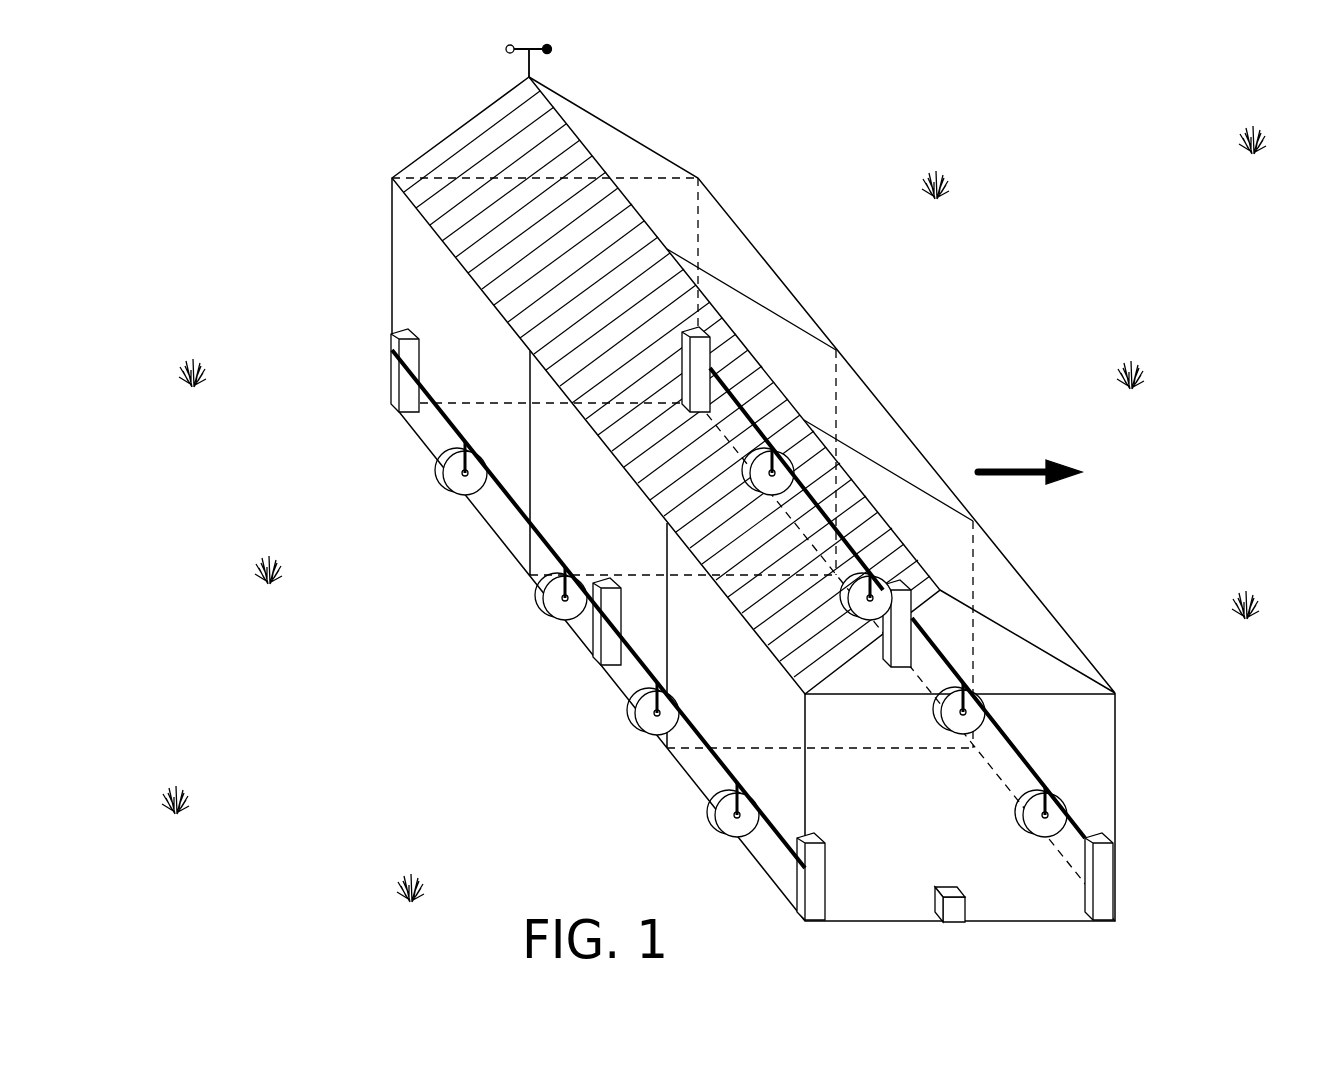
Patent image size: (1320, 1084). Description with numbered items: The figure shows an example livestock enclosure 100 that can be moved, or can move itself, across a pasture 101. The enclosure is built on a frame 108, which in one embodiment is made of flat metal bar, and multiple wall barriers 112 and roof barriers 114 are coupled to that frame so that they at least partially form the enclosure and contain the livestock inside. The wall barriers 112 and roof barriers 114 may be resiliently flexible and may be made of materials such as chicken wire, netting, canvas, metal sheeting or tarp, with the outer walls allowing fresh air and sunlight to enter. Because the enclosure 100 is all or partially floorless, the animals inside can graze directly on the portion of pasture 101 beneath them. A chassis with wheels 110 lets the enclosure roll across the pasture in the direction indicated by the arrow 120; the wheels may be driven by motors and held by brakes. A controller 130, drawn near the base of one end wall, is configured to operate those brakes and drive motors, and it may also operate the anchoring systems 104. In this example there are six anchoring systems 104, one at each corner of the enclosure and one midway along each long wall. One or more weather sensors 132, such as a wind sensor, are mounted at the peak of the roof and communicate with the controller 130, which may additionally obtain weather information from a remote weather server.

The livestock enclosure 100 is at (176, 195).
The pasture 101 is at (1117, 258).
The anchoring systems 104 is at (718, 168).
The frame 108 is at (435, 421).
The wheels 110 is at (532, 602).
The wall barriers 112 is at (437, 343).
The roof barriers 114 is at (527, 250).
The arrow 120 is at (988, 465).
The controller 130 is at (954, 928).
The weather sensors 132 is at (482, 48).